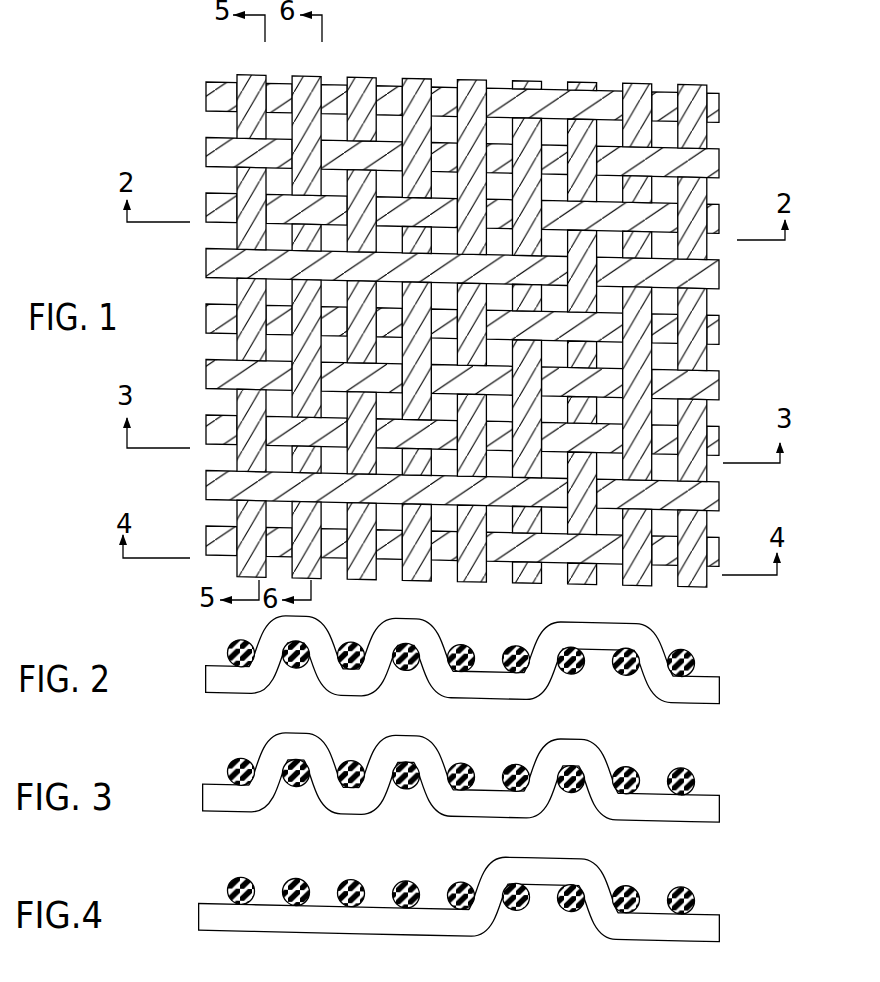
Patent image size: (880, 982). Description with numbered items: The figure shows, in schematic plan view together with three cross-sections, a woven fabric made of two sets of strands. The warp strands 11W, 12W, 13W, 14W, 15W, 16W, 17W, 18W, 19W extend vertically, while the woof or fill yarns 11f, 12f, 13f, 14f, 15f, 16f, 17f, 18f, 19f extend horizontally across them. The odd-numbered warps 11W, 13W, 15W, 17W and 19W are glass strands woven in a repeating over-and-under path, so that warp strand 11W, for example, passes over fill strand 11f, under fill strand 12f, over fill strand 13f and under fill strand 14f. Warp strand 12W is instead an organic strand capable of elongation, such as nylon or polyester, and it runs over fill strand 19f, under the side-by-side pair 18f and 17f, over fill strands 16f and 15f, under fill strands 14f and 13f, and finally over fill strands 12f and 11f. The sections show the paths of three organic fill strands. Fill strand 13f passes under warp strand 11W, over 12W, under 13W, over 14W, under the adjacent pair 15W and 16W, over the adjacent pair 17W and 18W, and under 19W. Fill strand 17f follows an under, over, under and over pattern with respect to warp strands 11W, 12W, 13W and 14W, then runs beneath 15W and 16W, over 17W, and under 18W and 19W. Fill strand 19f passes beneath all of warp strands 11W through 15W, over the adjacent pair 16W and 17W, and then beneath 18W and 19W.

In FIG. 1, the warp strand 11W is at (253, 73).
In FIG. 2, the warp strand 11W is at (232, 638).
In FIG. 3, the warp strand 11W is at (233, 758).
In FIG. 4, the warp strand 11W is at (235, 877).
In FIG. 1, the warp strand 12W is at (308, 72).
In FIG. 2, the warp strand 12W is at (295, 665).
In FIG. 3, the warp strand 12W is at (298, 788).
In FIG. 4, the warp strand 12W is at (295, 875).
In FIG. 1, the warp strand 13W is at (363, 71).
In FIG. 2, the warp strand 13W is at (345, 637).
In FIG. 3, the warp strand 13W is at (350, 754).
In FIG. 4, the warp strand 13W is at (349, 874).
In FIG. 1, the warp strand 14W is at (418, 70).
In FIG. 2, the warp strand 14W is at (407, 664).
In FIG. 3, the warp strand 14W is at (407, 785).
In FIG. 4, the warp strand 14W is at (406, 873).
In FIG. 1, the warp strand 15W is at (473, 68).
In FIG. 2, the warp strand 15W is at (455, 639).
In FIG. 3, the warp strand 15W is at (470, 746).
In FIG. 4, the warp strand 15W is at (460, 871).
In FIG. 1, the warp strand 16W is at (532, 57).
In FIG. 2, the warp strand 16W is at (512, 639).
In FIG. 3, the warp strand 16W is at (514, 758).
In FIG. 4, the warp strand 16W is at (514, 898).
In FIG. 1, the warp strand 17W is at (584, 66).
In FIG. 2, the warp strand 17W is at (572, 660).
In FIG. 3, the warp strand 17W is at (572, 782).
In FIG. 4, the warp strand 17W is at (572, 897).
In FIG. 1, the warp strand 18W is at (639, 65).
In FIG. 2, the warp strand 18W is at (625, 659).
In FIG. 3, the warp strand 18W is at (645, 745).
In FIG. 4, the warp strand 18W is at (635, 879).
In FIG. 1, the warp strand 19W is at (694, 64).
In FIG. 2, the warp strand 19W is at (696, 627).
In FIG. 3, the warp strand 19W is at (688, 755).
In FIG. 4, the warp strand 19W is at (700, 874).
In FIG. 1, the fill strand 11f is at (207, 93).
In FIG. 1, the fill strand 12f is at (207, 148).
In FIG. 1, the fill strand 13f is at (207, 204).
In FIG. 2, the fill strand 13f is at (206, 688).
In FIG. 1, the fill strand 14f is at (207, 260).
In FIG. 1, the fill strand 15f is at (207, 315).
In FIG. 1, the fill strand 16f is at (207, 370).
In FIG. 1, the fill strand 17f is at (207, 426).
In FIG. 3, the fill strand 17f is at (205, 808).
In FIG. 1, the fill strand 18f is at (207, 482).
In FIG. 1, the fill strand 19f is at (207, 537).
In FIG. 4, the fill strand 19f is at (198, 930).